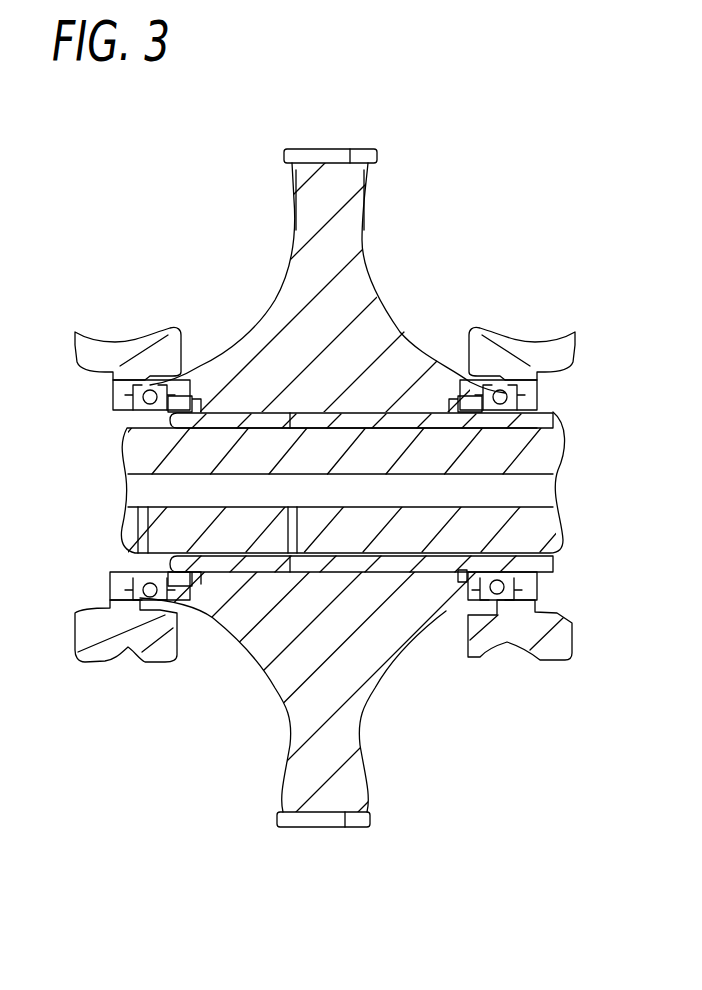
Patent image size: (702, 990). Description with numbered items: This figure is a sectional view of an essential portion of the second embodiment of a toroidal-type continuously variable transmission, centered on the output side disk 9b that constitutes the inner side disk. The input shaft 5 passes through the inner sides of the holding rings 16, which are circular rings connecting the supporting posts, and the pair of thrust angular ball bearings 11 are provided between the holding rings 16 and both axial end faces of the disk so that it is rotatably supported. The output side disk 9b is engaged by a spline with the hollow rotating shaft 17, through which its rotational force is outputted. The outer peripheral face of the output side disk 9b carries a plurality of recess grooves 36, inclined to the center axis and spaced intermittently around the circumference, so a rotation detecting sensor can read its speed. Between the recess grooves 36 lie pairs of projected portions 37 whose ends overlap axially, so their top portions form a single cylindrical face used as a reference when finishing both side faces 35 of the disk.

The input shaft 5 is at (140, 447).
The output side disk 9b is at (352, 290).
The thrust angular ball bearing 11 is at (152, 585).
The holding ring 16 is at (150, 385).
The hollow rotating shaft 17 is at (441, 613).
The side face 35 is at (291, 266).
The recess groove 36 is at (350, 149).
The projected portion 37 is at (325, 149).